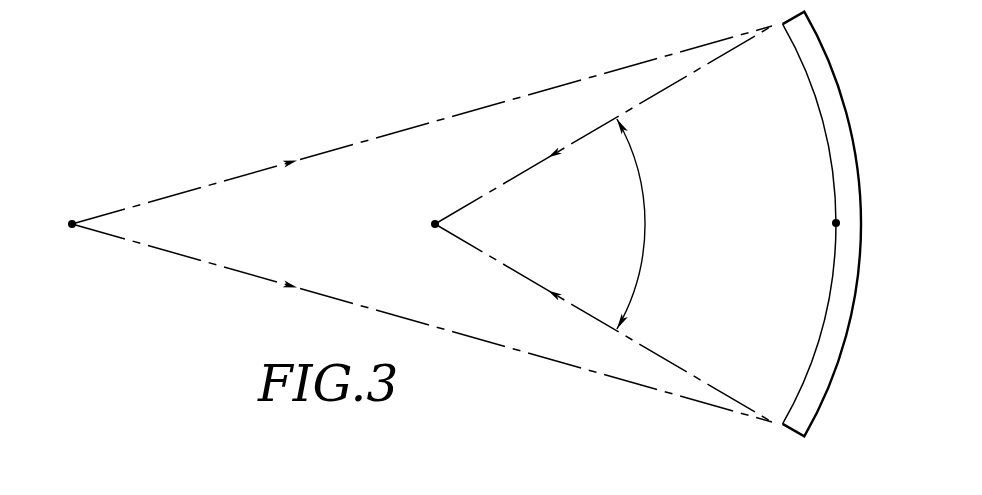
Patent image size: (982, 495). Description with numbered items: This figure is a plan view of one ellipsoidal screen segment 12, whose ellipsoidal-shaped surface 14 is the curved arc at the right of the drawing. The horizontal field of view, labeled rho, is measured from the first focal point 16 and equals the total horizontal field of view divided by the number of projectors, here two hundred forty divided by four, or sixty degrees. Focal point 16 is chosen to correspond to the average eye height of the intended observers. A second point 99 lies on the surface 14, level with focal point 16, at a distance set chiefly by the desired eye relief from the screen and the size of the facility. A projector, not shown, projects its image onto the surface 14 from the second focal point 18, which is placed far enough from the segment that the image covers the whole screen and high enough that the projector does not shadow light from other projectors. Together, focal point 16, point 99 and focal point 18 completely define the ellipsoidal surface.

The screen segment 12 is at (862, 131).
The ellipsoidal-shaped surface 14 is at (824, 142).
The second point 99 is at (826, 230).
The second focal point 18 is at (66, 218).
The first focal point 16 is at (427, 219).